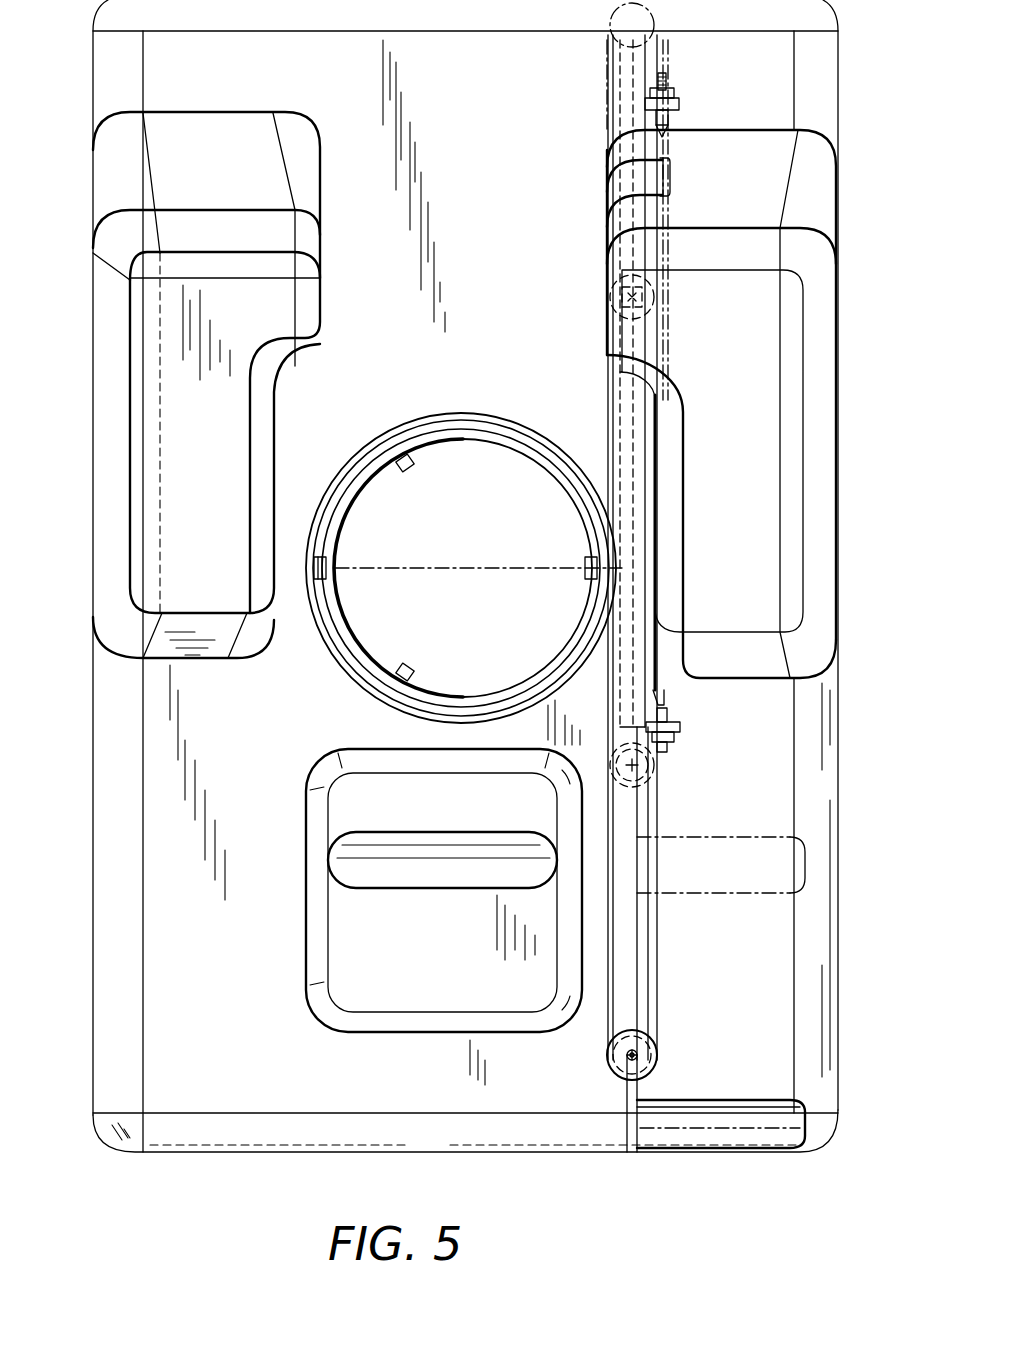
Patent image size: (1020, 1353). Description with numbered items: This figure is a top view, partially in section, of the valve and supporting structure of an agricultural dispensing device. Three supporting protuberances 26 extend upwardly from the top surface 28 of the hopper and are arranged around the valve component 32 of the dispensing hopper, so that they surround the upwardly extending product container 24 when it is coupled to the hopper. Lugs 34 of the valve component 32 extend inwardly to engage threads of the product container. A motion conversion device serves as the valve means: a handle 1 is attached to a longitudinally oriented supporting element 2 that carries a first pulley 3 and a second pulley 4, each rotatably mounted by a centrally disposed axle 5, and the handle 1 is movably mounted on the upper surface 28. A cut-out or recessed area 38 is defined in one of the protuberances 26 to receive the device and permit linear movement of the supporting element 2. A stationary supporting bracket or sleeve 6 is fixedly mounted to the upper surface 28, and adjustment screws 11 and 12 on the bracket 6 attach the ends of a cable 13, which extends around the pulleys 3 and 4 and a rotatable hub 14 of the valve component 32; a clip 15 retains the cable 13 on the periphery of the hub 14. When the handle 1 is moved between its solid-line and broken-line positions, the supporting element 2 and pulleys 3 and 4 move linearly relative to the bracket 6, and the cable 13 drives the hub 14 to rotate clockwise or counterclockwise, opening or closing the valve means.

The handle 1 is at (805, 870).
The supporting element 2 is at (642, 1084).
The first pulley 3 is at (658, 1051).
The second pulley 4 is at (660, 291).
The axle 5 is at (652, 313).
The supporting bracket 6 is at (648, 655).
The adjustment screw 11 is at (664, 744).
The adjustment screw 12 is at (667, 78).
The cable 13 is at (663, 146).
The rotatable hub 14 is at (355, 506).
The clip 15 is at (316, 568).
The product container 24 is at (838, 950).
The supporting protuberance 26 is at (218, 435).
The top surface 28 is at (760, 793).
The valve component 32 is at (346, 672).
The lug 34 is at (413, 469).
The recessed area 38 is at (672, 211).